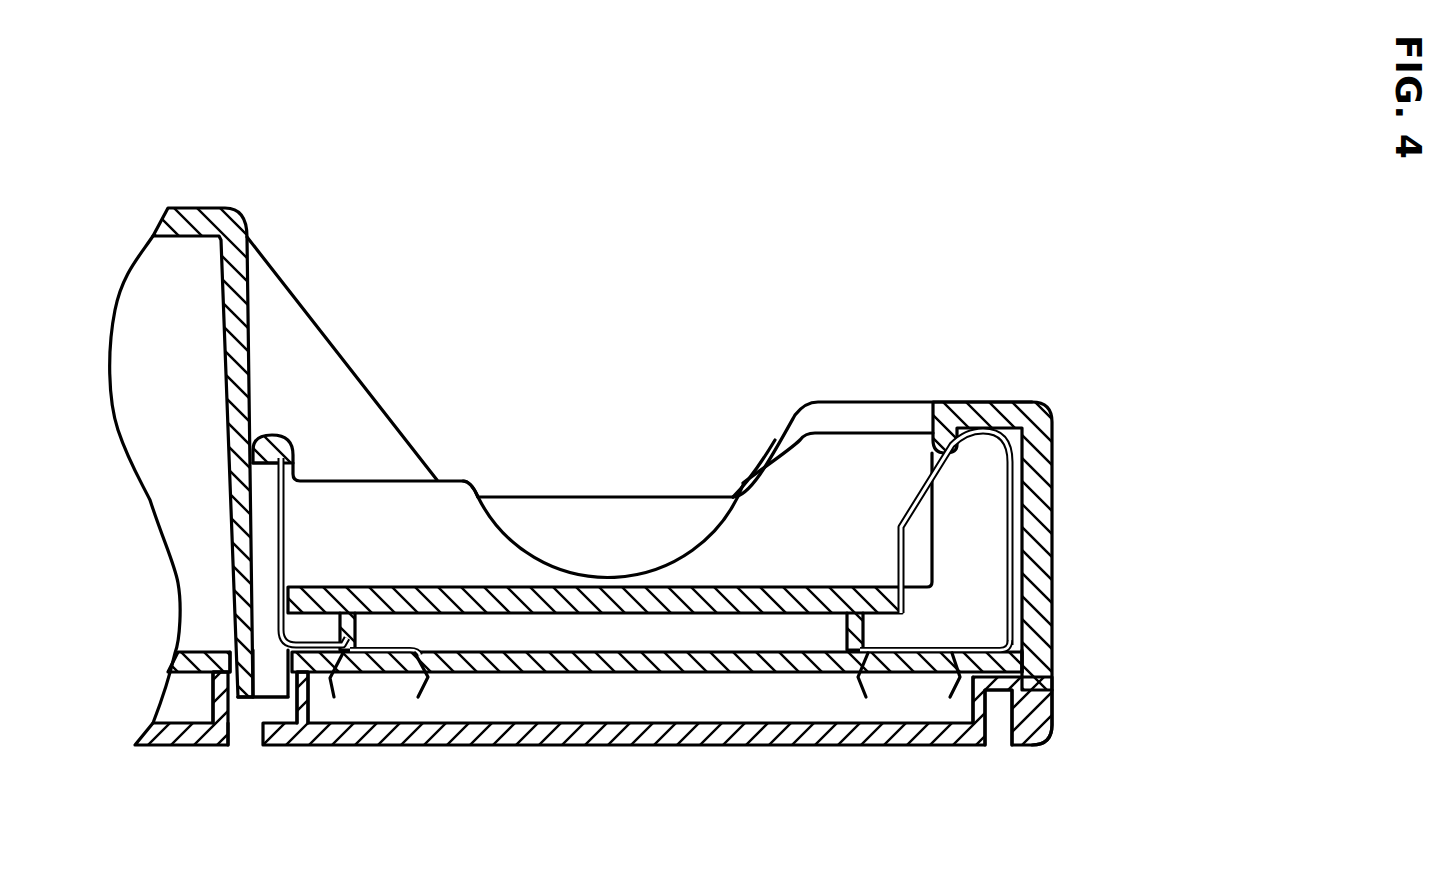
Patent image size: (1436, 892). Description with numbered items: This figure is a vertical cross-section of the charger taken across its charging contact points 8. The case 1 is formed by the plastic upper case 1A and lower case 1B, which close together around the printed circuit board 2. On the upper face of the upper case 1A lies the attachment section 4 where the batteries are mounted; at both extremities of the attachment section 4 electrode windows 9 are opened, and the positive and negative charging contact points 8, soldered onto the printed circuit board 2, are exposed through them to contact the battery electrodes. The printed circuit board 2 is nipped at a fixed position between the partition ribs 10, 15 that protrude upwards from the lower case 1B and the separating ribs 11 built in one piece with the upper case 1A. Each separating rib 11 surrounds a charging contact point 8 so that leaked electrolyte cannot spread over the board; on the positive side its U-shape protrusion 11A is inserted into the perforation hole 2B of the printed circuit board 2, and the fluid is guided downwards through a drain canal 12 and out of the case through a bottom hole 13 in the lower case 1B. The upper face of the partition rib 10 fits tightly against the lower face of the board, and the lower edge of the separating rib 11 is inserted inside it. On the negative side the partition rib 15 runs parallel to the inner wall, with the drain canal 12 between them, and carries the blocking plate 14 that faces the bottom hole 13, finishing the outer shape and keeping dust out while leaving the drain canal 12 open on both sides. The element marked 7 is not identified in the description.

The case 1 is at (1049, 379).
The upper case 1A is at (207, 213).
The lower case 1B is at (582, 740).
The printed circuit board 2 is at (183, 660).
The perforation hole 2B is at (238, 647).
The attachment section 4 is at (643, 392).
The guide ramp 7 is at (453, 505).
The charging contact point 8 is at (298, 478).
The electrode window 9 is at (303, 530).
The partition rib 10 is at (218, 698).
The separating rib 11 is at (360, 637).
The U-shape protrusion 11A is at (257, 690).
The drain canal 12 is at (266, 653).
The bottom hole 13 is at (233, 751).
The blocking plate 14 is at (1047, 700).
The partition rib 15 is at (977, 707).